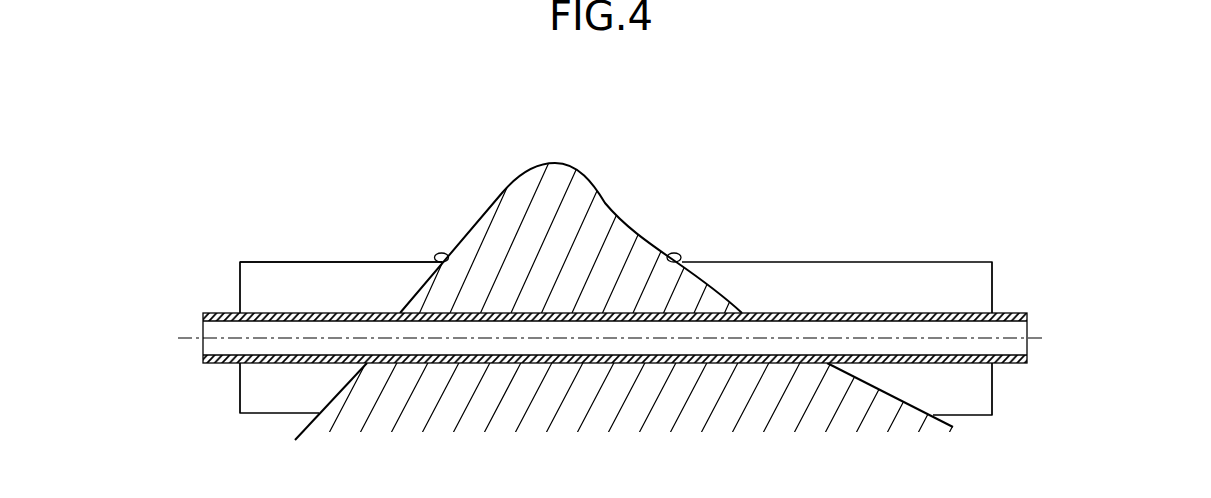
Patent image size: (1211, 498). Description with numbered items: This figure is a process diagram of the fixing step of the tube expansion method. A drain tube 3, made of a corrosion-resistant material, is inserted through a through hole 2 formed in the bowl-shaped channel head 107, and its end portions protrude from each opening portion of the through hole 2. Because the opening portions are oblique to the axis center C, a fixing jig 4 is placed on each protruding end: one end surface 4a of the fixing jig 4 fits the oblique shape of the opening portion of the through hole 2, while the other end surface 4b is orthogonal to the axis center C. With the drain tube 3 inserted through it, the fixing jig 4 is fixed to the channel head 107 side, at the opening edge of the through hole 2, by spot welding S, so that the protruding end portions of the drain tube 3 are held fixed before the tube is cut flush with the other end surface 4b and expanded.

The channel head 107 is at (570, 164).
The fixing jig 4 is at (321, 262).
The one end surface 4a is at (440, 268).
The other end surface 4b is at (240, 293).
The drain tube 3 is at (357, 313).
The through hole 2 is at (729, 313).
The axis center C is at (190, 335).
The spot welding S is at (437, 253).